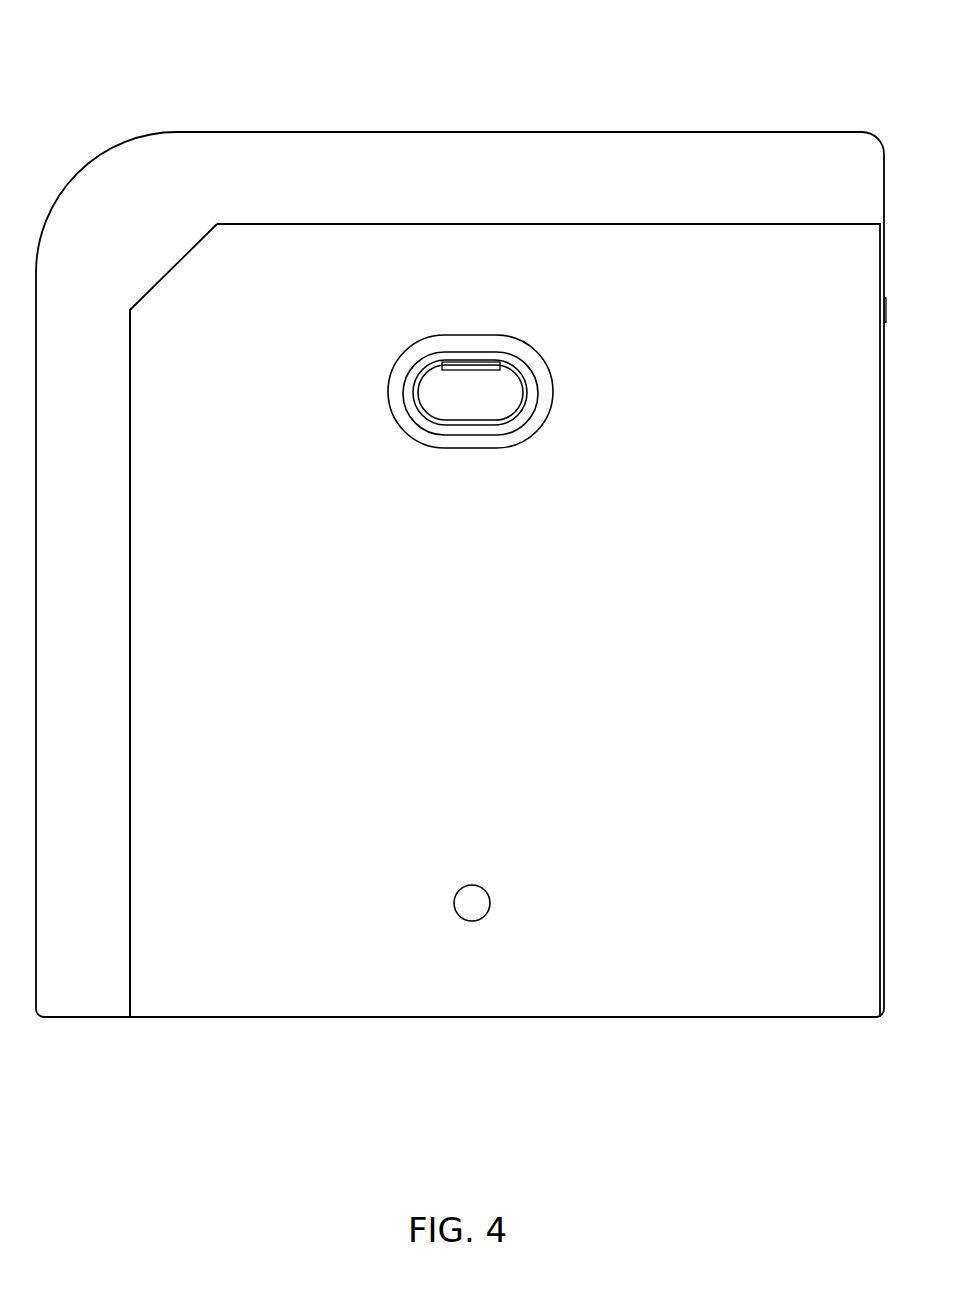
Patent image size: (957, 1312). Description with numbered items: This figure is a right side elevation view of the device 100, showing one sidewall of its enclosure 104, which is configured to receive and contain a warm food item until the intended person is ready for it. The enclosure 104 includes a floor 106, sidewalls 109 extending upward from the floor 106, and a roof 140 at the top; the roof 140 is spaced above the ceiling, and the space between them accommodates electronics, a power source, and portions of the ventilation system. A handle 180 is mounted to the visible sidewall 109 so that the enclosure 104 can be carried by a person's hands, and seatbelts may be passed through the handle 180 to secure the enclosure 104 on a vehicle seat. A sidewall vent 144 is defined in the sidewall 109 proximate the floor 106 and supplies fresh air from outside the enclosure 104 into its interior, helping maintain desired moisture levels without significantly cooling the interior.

The device 100 is at (310, 68).
The roof 140 is at (523, 132).
The floor 106 is at (237, 1020).
The enclosure 104 is at (682, 322).
The sidewalls 109 is at (312, 548).
The handles 180 is at (528, 398).
The sidewall vents 144 is at (484, 888).